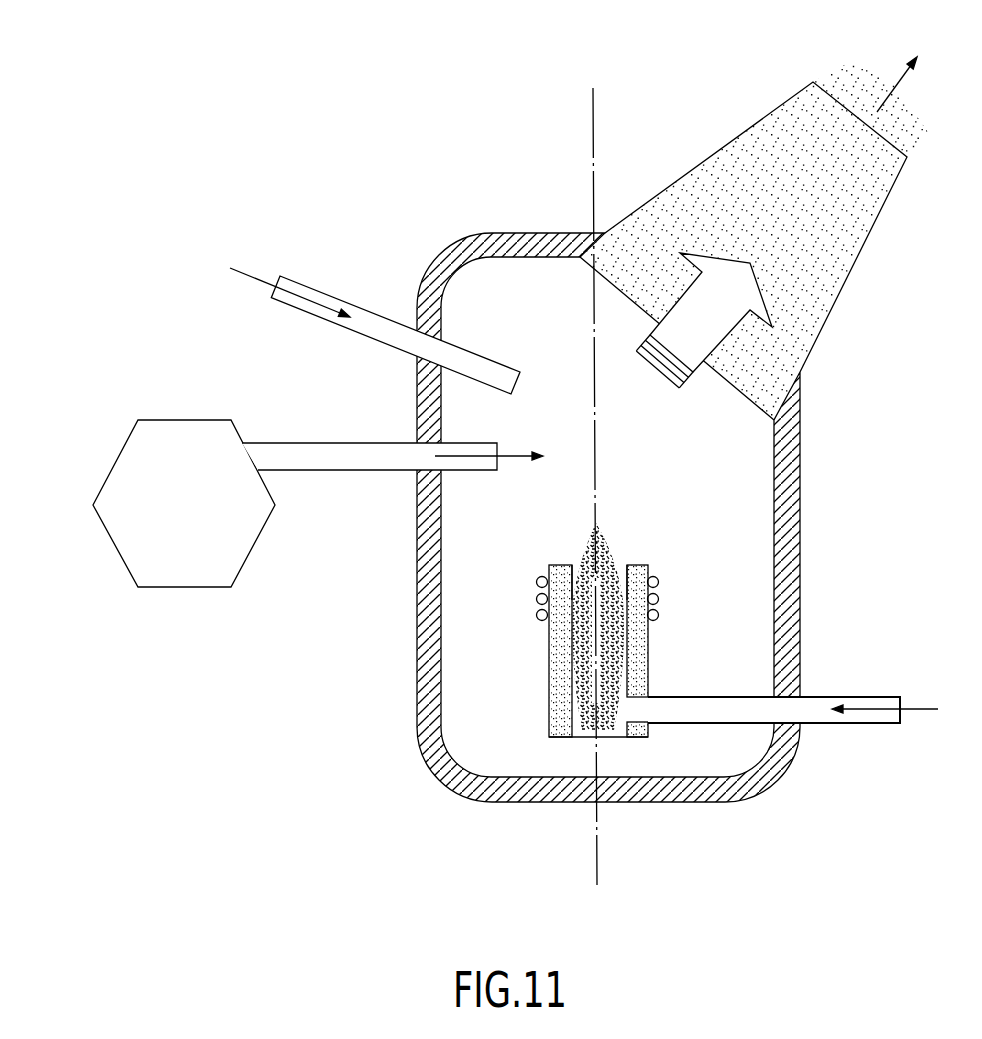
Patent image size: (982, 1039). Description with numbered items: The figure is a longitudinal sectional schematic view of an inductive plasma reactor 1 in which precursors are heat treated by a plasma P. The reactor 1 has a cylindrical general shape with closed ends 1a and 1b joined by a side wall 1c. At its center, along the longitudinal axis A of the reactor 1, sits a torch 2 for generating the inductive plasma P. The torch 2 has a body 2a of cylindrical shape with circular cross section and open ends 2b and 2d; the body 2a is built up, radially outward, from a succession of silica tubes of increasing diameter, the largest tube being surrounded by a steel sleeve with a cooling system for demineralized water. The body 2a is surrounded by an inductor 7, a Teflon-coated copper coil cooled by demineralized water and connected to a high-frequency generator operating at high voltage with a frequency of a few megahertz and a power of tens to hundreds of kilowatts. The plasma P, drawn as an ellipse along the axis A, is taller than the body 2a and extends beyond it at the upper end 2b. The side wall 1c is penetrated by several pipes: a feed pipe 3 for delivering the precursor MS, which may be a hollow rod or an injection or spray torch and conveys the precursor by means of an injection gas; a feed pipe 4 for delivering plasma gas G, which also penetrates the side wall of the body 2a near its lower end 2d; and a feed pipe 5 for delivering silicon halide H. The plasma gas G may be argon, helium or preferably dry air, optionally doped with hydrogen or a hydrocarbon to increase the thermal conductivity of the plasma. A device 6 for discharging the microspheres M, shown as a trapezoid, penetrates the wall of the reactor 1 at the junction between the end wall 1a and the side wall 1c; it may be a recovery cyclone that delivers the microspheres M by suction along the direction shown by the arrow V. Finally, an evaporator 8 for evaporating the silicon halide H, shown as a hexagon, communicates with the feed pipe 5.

The reactor 1 is at (631, 514).
The end wall 1a is at (518, 245).
The closed end 1b is at (537, 803).
The side wall 1c is at (418, 400).
The torch 2 is at (614, 689).
The body 2a is at (556, 663).
The upper end 2b is at (563, 578).
The lower end 2d is at (550, 738).
The feed pipe 3 is at (368, 309).
The feed pipe 4 is at (820, 718).
The feed pipe 5 is at (318, 446).
The device for discharging the microspheres 6 is at (752, 167).
The inductor 7 is at (536, 613).
The evaporator 8 is at (177, 438).
The longitudinal axis A is at (593, 120).
The arrow V is at (700, 297).
The microspheres M is at (895, 82).
The precursor MS is at (273, 236).
The silicon halide H is at (509, 457).
The plasma gas G is at (921, 706).
The plasma P is at (611, 706).